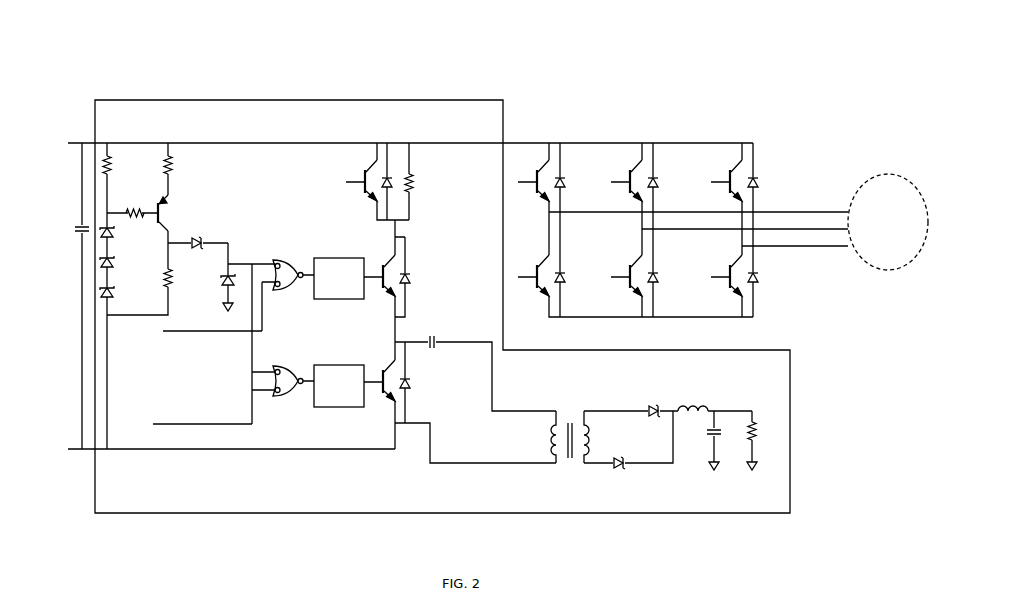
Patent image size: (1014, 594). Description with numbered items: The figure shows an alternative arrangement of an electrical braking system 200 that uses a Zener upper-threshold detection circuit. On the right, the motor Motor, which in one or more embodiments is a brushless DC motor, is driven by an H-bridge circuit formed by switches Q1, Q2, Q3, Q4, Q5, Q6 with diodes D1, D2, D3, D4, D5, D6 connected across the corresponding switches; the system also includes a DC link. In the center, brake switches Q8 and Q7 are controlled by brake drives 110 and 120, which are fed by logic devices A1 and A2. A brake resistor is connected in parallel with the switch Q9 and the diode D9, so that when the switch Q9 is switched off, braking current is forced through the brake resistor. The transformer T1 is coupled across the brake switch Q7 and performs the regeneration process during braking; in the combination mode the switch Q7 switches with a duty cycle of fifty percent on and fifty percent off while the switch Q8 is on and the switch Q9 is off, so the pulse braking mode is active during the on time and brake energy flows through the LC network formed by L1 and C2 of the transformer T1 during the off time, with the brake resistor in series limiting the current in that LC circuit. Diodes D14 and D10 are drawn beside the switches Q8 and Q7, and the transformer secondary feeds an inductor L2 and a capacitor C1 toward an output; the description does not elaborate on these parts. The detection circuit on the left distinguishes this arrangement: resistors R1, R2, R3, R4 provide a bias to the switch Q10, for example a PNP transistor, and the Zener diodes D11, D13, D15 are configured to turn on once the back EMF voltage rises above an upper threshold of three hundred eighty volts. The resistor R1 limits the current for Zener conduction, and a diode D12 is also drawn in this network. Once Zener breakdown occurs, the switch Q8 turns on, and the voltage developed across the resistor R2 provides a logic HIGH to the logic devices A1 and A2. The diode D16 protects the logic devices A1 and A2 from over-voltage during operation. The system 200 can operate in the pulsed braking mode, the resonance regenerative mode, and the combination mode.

The electrical braking system 200 is at (482, 58).
The brake drive 110 is at (336, 258).
The brake drive 120 is at (336, 365).
The resistor R1 is at (117, 165).
The resistor R2 is at (160, 278).
The resistor R3 is at (135, 203).
The resistor R4 is at (179, 166).
The switch Q10 is at (173, 213).
The Zener diode D11 is at (122, 236).
The diode D12 is at (205, 234).
The Zener diode D13 is at (122, 266).
The Zener diode D15 is at (122, 296).
The diode D16 is at (210, 292).
The logic device A1 is at (288, 263).
The logic device A2 is at (288, 373).
The switch Q9 is at (361, 177).
The diode D9 is at (395, 175).
The brake switch Q8 is at (379, 271).
The diode D14 is at (419, 282).
The brake switch Q7 is at (379, 377).
The diode D10 is at (419, 388).
The capacitor C2 is at (432, 333).
The transformer T1 is at (562, 429).
The inductor L1 is at (545, 437).
The inductor L2 is at (693, 399).
The capacitor C1 is at (722, 440).
The switch Q1 is at (533, 178).
The switch Q2 is at (533, 274).
The switch Q3 is at (626, 178).
The switch Q4 is at (626, 274).
The switch Q5 is at (726, 178).
The switch Q6 is at (726, 274).
The diode D1 is at (570, 185).
The diode D2 is at (665, 185).
The diode D3 is at (764, 185).
The diode D4 is at (570, 281).
The diode D5 is at (665, 281).
The diode D6 is at (764, 281).
The motor Motor is at (888, 222).